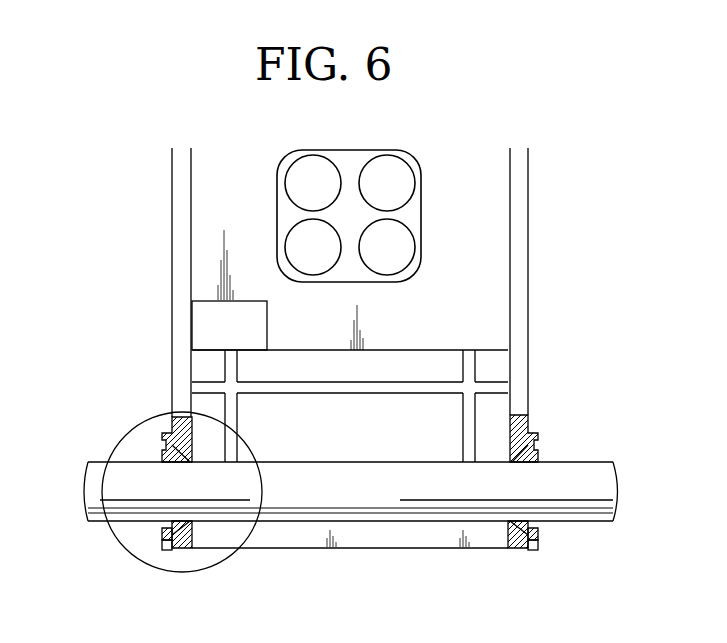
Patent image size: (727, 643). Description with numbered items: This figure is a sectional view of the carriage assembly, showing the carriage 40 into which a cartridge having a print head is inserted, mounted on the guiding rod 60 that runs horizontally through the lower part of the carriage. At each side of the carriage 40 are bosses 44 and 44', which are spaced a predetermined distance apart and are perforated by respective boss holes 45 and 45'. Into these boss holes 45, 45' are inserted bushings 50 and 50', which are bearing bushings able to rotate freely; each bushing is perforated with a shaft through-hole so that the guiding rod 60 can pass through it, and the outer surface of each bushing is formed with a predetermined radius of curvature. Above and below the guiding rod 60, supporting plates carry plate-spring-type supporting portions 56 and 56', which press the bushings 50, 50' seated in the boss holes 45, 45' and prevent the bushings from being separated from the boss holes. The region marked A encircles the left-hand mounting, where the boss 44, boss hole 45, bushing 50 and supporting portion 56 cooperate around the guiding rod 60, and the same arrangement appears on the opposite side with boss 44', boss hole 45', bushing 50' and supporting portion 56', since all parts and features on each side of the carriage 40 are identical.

The carriage 40 is at (176, 274).
The guiding rod 60 is at (358, 522).
The supporting portion 56 is at (133, 424).
The supporting portion 56' is at (576, 420).
The bushing 50 is at (128, 557).
The bushing 50' is at (581, 554).
The boss 44 is at (191, 576).
The boss 44' is at (520, 573).
The boss hole 45 is at (150, 585).
The boss hole 45' is at (558, 583).
The detail region A is at (108, 538).